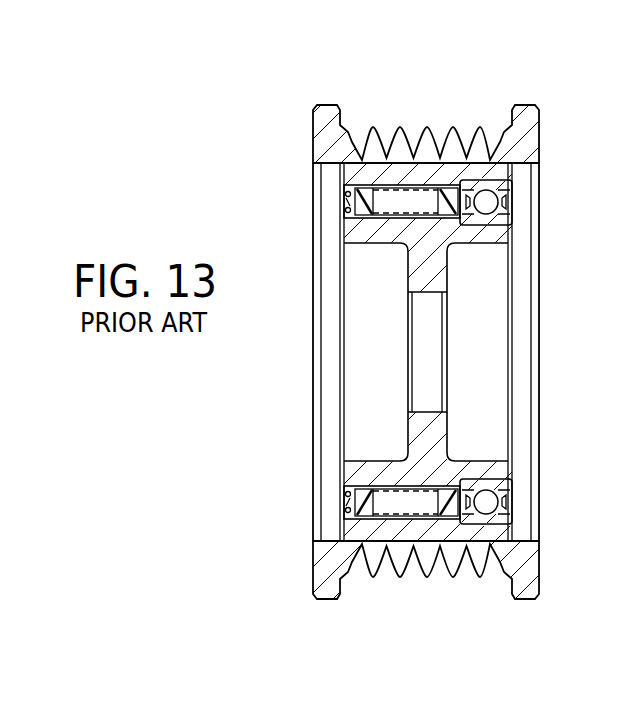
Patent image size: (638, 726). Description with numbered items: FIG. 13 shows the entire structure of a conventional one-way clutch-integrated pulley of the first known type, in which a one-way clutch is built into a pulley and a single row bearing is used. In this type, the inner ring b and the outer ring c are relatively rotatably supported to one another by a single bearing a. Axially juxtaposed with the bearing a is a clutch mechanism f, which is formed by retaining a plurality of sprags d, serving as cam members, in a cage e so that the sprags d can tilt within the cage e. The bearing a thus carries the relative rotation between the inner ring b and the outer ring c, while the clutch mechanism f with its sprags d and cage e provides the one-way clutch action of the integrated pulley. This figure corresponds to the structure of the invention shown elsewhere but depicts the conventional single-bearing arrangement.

The bearing a is at (488, 178).
The inner ring b is at (364, 243).
The outer ring c is at (360, 160).
The sprag d is at (397, 187).
The cage e is at (447, 187).
The clutch mechanism f is at (420, 180).